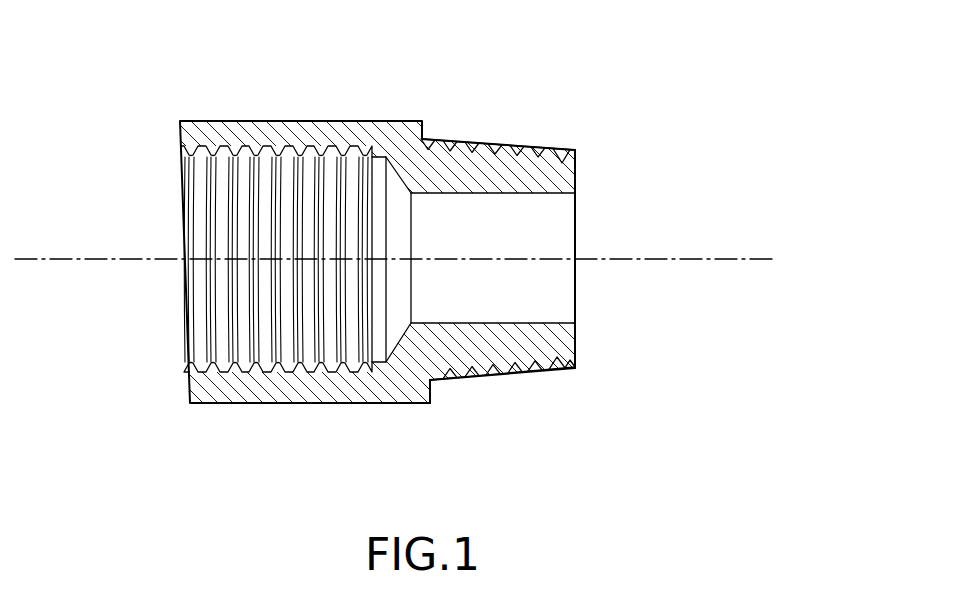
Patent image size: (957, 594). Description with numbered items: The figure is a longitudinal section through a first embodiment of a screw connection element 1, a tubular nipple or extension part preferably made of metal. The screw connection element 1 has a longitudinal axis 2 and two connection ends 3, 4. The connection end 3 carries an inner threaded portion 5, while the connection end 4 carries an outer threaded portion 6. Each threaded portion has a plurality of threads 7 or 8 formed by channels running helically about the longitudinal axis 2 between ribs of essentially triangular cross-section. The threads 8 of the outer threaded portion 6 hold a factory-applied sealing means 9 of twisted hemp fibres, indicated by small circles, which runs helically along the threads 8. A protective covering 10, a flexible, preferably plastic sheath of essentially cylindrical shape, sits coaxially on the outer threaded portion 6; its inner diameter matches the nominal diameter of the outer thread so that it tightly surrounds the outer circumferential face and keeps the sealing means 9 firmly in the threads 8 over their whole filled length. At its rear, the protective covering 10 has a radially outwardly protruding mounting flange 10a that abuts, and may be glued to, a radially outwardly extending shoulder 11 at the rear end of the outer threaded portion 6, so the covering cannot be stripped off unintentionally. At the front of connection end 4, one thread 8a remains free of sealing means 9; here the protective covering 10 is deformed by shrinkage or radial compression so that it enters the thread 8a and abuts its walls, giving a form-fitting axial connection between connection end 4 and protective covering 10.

The screw connection element 1 is at (218, 121).
The longitudinal axis 2 is at (150, 258).
The connection end 3 is at (312, 130).
The connection end 4 is at (563, 173).
The inner threaded portion 5 is at (197, 374).
The outer threaded portion 6 is at (532, 150).
The threads 7 is at (287, 373).
The threads 8 is at (465, 145).
The thread 8a is at (553, 370).
The sealing means 9 is at (523, 152).
The protective covering 10 is at (520, 376).
The mounting flange 10a is at (430, 394).
The shoulder 11 is at (423, 403).